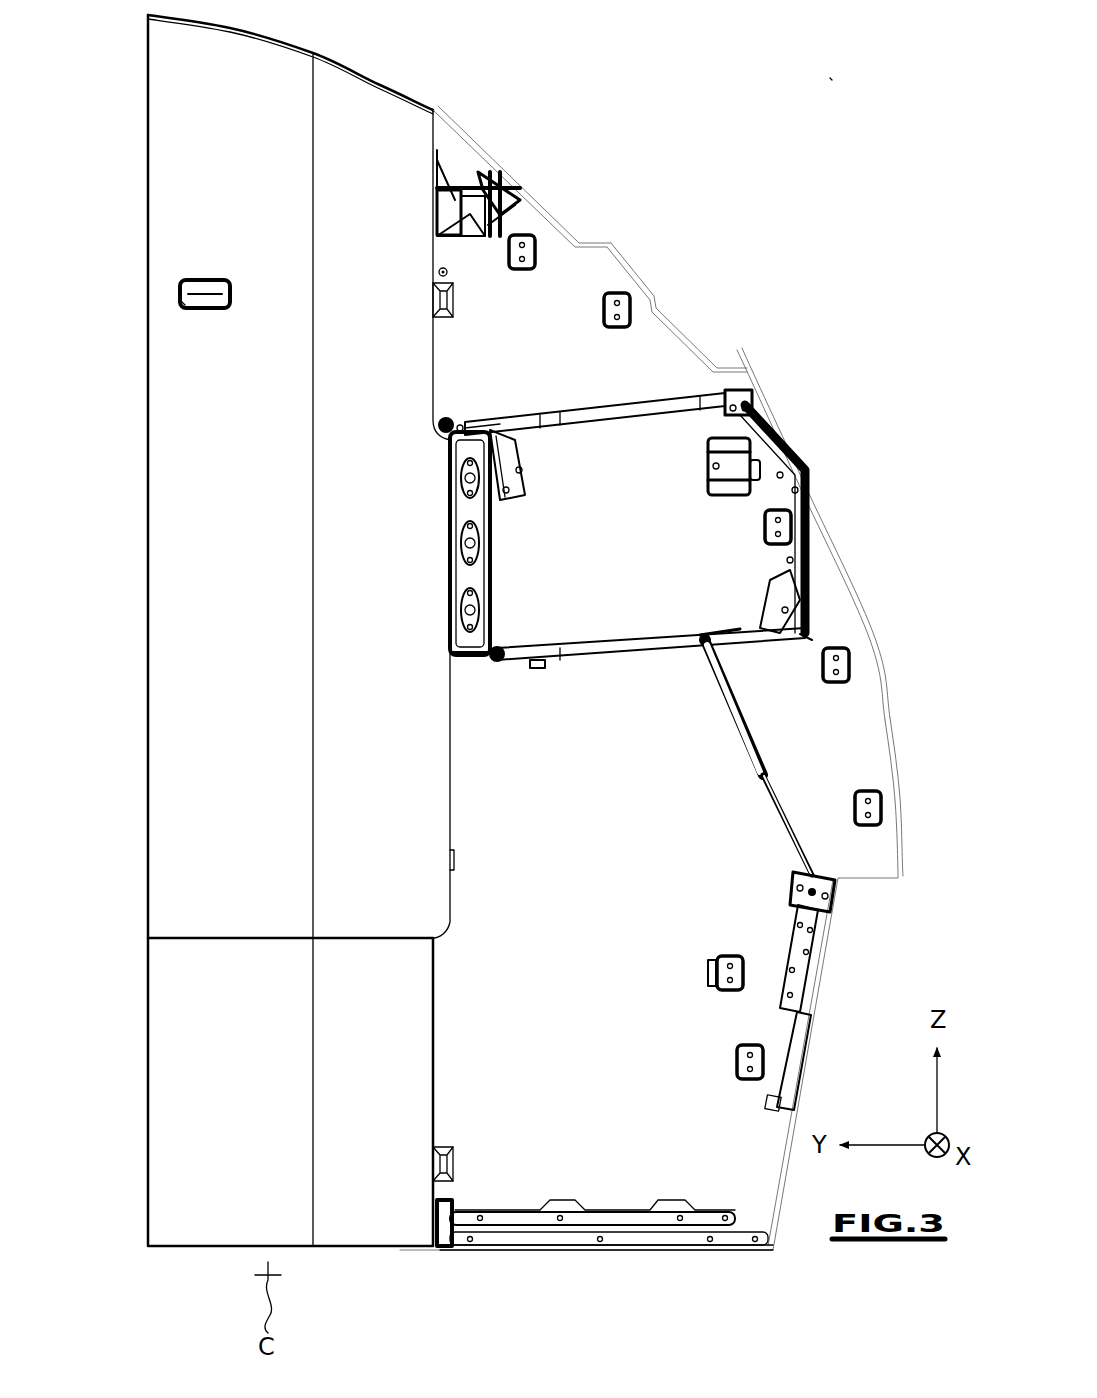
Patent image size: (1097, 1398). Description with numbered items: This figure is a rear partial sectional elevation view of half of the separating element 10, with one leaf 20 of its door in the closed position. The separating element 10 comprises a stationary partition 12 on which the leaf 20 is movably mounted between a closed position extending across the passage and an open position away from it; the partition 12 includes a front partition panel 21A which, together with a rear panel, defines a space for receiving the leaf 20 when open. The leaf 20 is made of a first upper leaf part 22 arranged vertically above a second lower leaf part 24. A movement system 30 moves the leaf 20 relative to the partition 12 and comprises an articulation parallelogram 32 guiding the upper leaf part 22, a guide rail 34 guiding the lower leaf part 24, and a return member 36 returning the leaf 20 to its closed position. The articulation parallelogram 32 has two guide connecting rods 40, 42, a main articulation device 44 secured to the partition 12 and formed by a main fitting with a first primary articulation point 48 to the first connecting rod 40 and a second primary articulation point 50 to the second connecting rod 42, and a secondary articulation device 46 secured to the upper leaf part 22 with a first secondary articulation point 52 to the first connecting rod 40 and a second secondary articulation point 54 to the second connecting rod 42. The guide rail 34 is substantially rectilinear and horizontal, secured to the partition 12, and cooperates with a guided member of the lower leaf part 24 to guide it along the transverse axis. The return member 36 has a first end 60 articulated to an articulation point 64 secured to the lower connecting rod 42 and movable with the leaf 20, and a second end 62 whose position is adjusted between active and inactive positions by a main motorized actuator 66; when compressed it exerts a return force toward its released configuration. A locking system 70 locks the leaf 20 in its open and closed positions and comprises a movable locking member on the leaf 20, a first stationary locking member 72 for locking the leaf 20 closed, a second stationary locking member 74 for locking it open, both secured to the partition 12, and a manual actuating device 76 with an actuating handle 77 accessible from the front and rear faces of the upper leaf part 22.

The separating element 10 is at (832, 78).
The stationary partition 12 is at (683, 330).
The leaf 20 is at (122, 125).
The front partition panel 21A is at (549, 857).
The first upper leaf part 22 is at (370, 66).
The second lower leaf part 24 is at (148, 1125).
The movement system 30 is at (897, 755).
The articulation parallelogram 32 is at (790, 420).
The guide rail 34 is at (613, 1197).
The return member 36 is at (760, 740).
The first guide connecting rod 40 is at (585, 412).
The second guide connecting rod 42 is at (625, 655).
The main articulation device 44 is at (812, 565).
The secondary articulation device 46 is at (497, 568).
The first primary articulation point 48 is at (740, 400).
The second primary articulation point 50 is at (810, 637).
The first secondary articulation point 52 is at (448, 420).
The second secondary articulation point 54 is at (495, 660).
The first end 60 is at (705, 648).
The second end 62 is at (815, 875).
The articulation point 64 is at (722, 635).
The main motorized actuator 66 is at (772, 1052).
The locking system 70 is at (495, 130).
The first stationary locking member 72 is at (515, 180).
The second stationary locking member 74 is at (705, 500).
The actuating device 76 is at (183, 305).
The actuating handle 77 is at (185, 290).